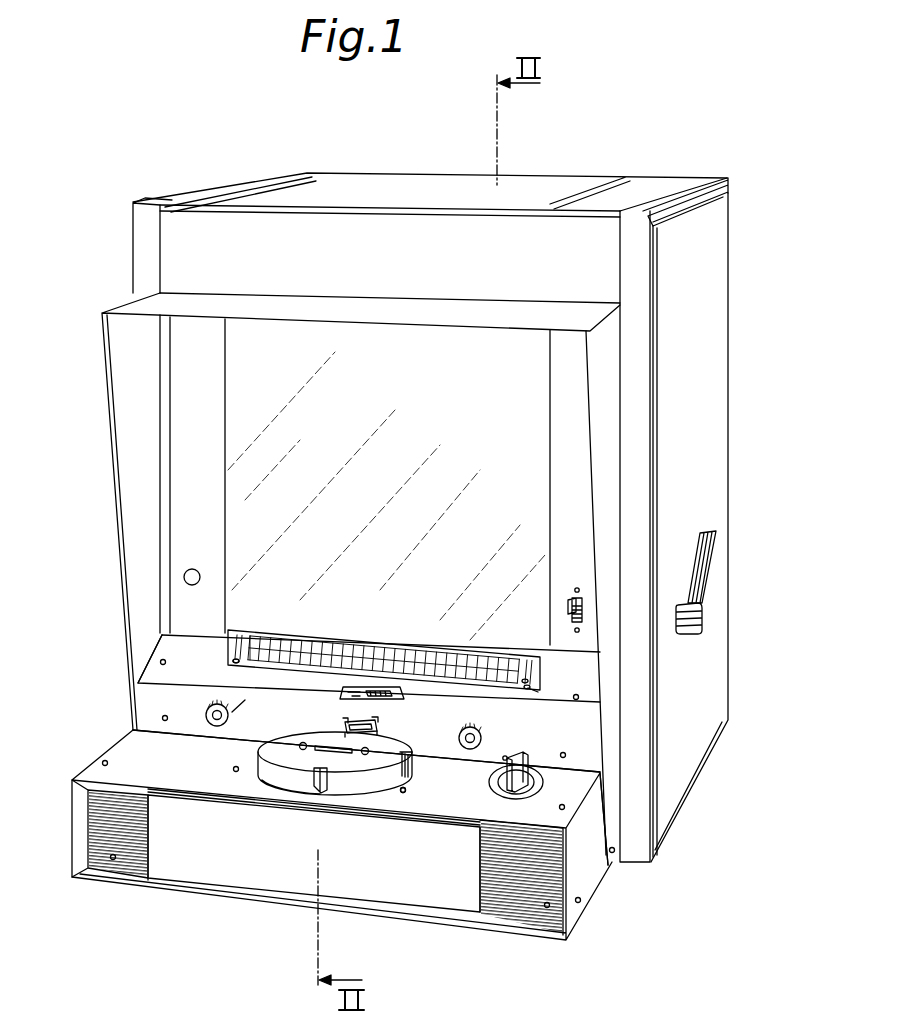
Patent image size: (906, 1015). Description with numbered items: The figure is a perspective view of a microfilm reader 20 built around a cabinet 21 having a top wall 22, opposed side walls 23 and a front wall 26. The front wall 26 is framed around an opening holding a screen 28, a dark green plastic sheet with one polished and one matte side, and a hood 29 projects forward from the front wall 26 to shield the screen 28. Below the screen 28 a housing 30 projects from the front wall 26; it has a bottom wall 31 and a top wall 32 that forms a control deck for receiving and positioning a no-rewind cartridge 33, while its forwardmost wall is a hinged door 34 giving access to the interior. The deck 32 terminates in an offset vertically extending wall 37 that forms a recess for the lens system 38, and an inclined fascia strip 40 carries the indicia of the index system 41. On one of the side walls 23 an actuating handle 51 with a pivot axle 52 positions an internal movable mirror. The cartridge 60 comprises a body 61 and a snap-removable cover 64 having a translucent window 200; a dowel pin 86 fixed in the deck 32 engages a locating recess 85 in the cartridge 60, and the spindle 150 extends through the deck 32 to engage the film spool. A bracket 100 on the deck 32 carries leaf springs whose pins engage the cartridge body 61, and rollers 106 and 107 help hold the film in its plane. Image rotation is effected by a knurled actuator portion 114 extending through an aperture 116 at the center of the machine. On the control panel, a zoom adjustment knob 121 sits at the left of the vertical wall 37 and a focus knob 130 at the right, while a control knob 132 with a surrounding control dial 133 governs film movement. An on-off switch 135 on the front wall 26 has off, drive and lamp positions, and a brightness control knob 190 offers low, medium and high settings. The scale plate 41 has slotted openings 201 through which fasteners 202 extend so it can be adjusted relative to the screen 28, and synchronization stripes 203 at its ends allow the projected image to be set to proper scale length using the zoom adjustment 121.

The reader 20 is at (125, 245).
The cabinet 21 is at (706, 183).
The top wall 22 is at (546, 180).
The side walls 23 is at (710, 354).
The front wall 26 is at (200, 226).
The screen 28 is at (420, 393).
The hood 29 is at (135, 322).
The housing 30 is at (190, 898).
The bottom wall 31 is at (596, 892).
The top wall 32 is at (97, 762).
The no-rewind cartridge 33 is at (250, 783).
The hinged door 34 is at (287, 874).
The vertically extending wall 37 is at (240, 722).
The lens system 38 is at (243, 700).
The inclined fascia strip 40 is at (203, 638).
The index system 41 is at (265, 634).
The actuating handle 51 is at (700, 530).
The pivot axle 52 is at (703, 620).
The cartridge 60 is at (377, 792).
The body 61 is at (347, 755).
The cover 64 is at (410, 791).
The locating recess 85 is at (316, 772).
The dowel pin 86 is at (340, 781).
The bracket 100 is at (380, 722).
The roller 106 is at (344, 726).
The second roller 107 is at (384, 733).
The knurled actuator portion 114 is at (362, 689).
The aperture 116 is at (394, 689).
The zoom adjustment knob 121 is at (206, 710).
The focus knob 130 is at (484, 732).
The control knob 132 is at (508, 790).
The control dial 133 is at (534, 778).
The on-off switch 135 is at (571, 603).
The spindle 150 is at (285, 733).
The brightness control knob 190 is at (198, 570).
The translucent window 200 is at (372, 758).
The slotted openings 201 is at (536, 691).
The fasteners 202 is at (528, 681).
The synchronization stripe 203 is at (248, 633).